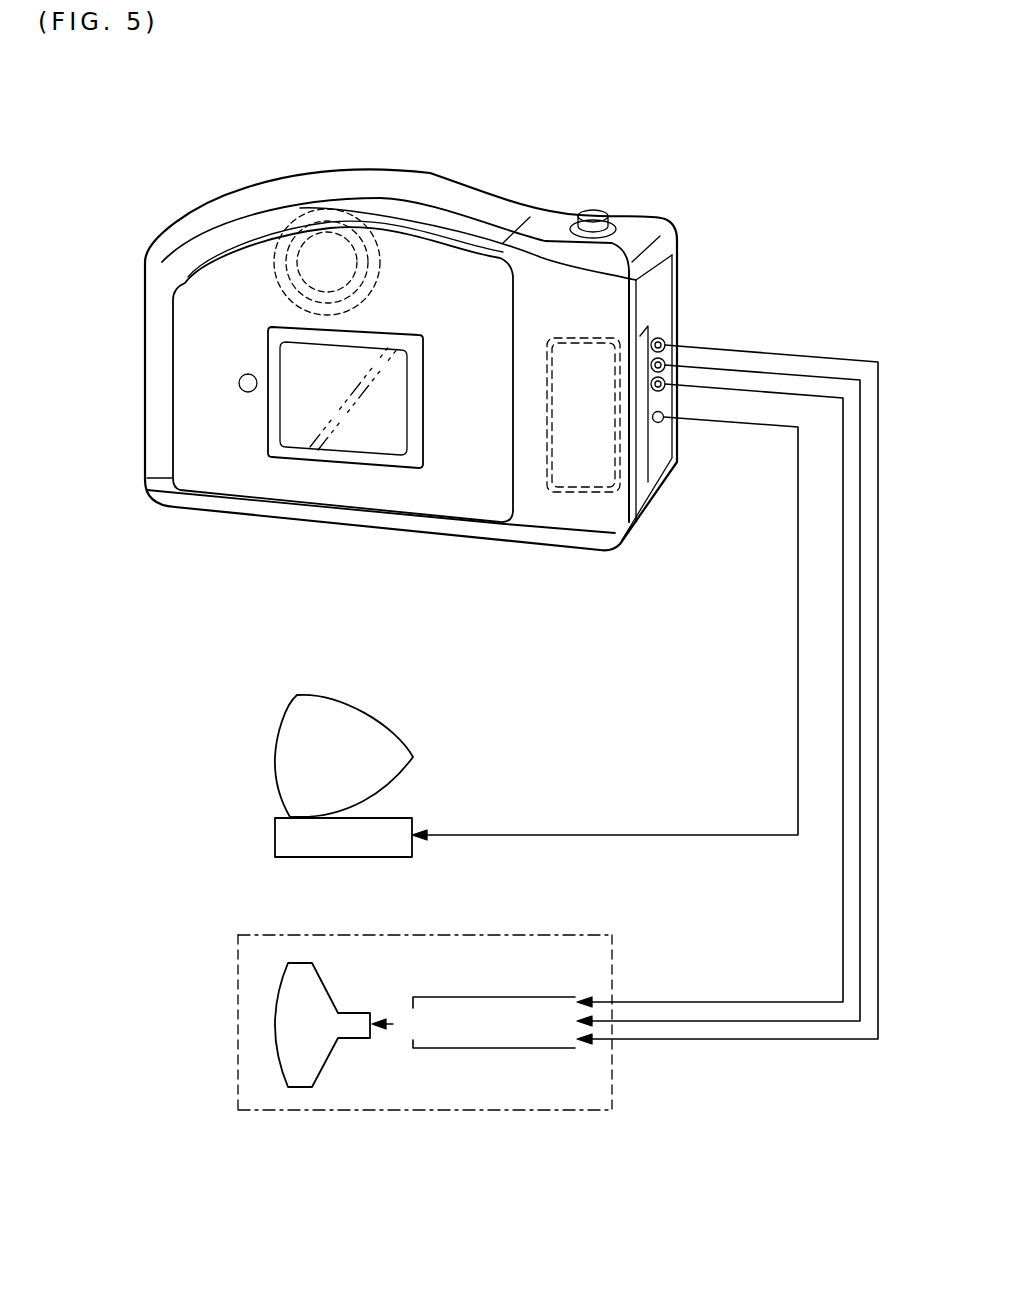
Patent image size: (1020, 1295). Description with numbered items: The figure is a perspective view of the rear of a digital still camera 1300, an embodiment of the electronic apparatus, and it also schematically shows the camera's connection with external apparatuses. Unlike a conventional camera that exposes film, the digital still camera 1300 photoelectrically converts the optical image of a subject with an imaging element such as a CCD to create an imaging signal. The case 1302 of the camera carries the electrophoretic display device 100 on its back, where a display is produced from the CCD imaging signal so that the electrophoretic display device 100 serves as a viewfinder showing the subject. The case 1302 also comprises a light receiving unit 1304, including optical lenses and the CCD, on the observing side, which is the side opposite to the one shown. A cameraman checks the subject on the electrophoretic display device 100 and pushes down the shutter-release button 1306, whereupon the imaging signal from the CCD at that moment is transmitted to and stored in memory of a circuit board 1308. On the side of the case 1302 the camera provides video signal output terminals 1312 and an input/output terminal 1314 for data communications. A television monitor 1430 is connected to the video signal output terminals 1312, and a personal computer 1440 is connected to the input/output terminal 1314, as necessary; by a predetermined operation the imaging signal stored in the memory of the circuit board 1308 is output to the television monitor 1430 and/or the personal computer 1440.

The digital still camera 1300 is at (500, 104).
The case 1302 is at (148, 300).
The light receiving unit 1304 is at (362, 233).
The shutter-release button 1306 is at (593, 212).
The circuit board 1308 is at (555, 487).
The video signal output terminals 1312 is at (677, 328).
The input/output terminal for data communications 1314 is at (673, 435).
The electrophoretic display device 100 is at (370, 430).
The personal computer 1440 is at (275, 745).
The television monitor 1430 is at (237, 995).